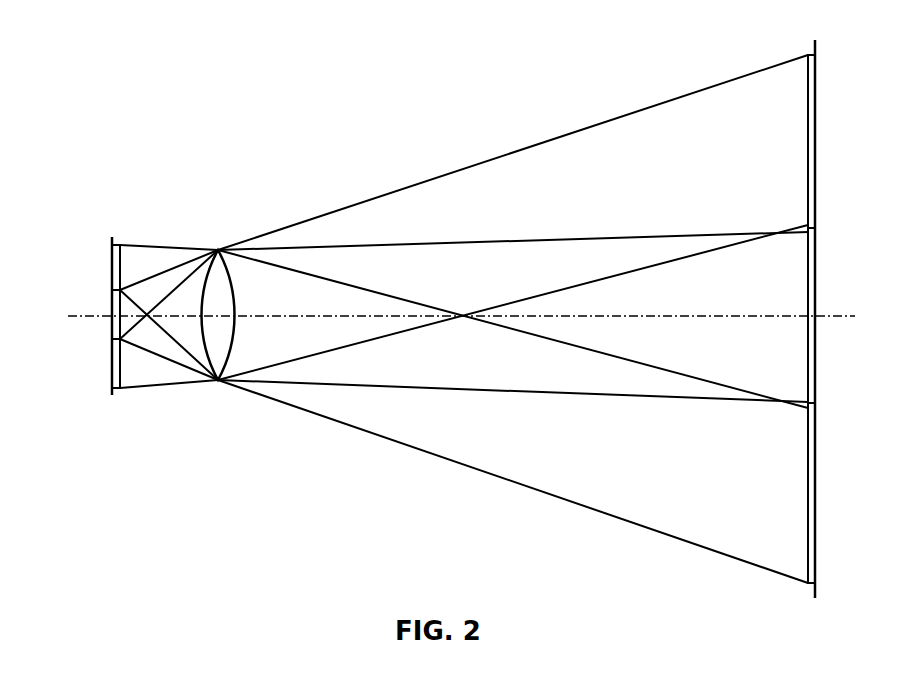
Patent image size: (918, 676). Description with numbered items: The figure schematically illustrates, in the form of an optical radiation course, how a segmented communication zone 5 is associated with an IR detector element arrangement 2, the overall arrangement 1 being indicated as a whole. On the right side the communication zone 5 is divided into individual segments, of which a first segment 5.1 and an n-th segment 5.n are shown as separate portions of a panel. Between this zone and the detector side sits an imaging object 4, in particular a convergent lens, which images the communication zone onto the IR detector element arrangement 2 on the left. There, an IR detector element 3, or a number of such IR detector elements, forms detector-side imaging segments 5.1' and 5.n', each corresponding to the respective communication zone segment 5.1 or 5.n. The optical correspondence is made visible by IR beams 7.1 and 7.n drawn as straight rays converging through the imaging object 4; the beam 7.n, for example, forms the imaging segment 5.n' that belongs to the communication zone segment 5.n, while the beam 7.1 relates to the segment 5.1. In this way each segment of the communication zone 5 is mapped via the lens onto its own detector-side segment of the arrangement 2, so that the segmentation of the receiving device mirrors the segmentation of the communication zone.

The optical arrangement 1 is at (130, 222).
The IR detector element arrangement 2 is at (113, 237).
The IR detector element 3 is at (112, 351).
The imaging object 4 is at (217, 288).
The communication zone 5 is at (830, 282).
The segment of the communication zone 5.1 is at (844, 493).
The segment of the communication zone 5.n is at (843, 141).
The imaging segment 5.1' is at (88, 267).
The imaging segment 5.n' is at (88, 363).
The IR beam 7.1 is at (555, 498).
The IR beam 7.n is at (553, 139).